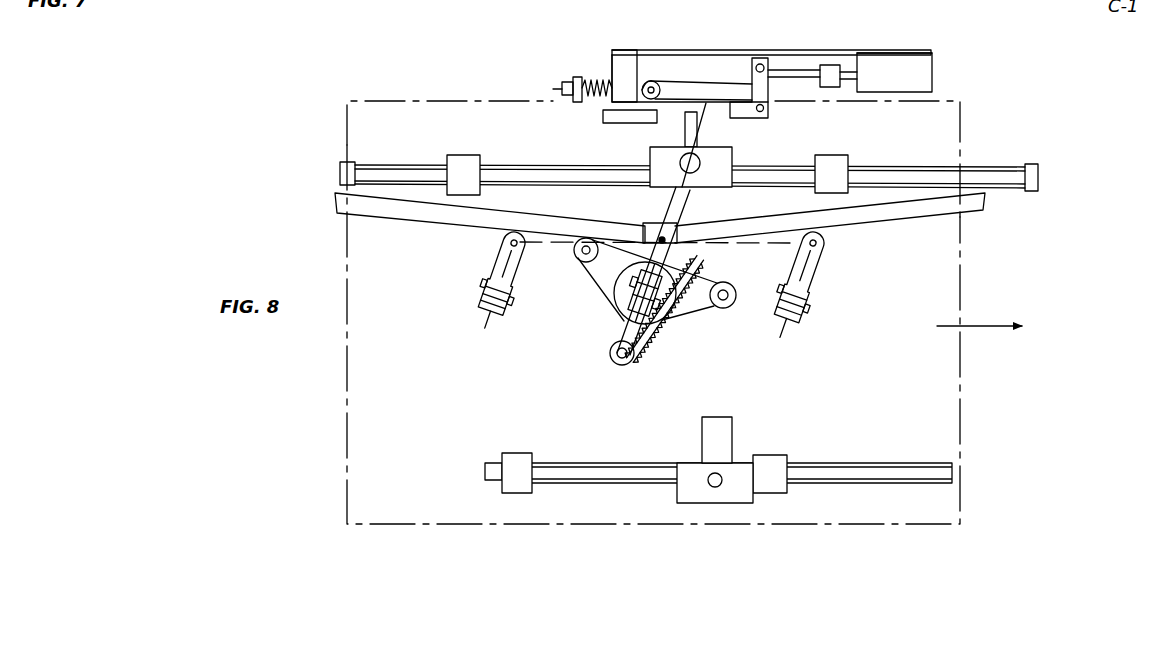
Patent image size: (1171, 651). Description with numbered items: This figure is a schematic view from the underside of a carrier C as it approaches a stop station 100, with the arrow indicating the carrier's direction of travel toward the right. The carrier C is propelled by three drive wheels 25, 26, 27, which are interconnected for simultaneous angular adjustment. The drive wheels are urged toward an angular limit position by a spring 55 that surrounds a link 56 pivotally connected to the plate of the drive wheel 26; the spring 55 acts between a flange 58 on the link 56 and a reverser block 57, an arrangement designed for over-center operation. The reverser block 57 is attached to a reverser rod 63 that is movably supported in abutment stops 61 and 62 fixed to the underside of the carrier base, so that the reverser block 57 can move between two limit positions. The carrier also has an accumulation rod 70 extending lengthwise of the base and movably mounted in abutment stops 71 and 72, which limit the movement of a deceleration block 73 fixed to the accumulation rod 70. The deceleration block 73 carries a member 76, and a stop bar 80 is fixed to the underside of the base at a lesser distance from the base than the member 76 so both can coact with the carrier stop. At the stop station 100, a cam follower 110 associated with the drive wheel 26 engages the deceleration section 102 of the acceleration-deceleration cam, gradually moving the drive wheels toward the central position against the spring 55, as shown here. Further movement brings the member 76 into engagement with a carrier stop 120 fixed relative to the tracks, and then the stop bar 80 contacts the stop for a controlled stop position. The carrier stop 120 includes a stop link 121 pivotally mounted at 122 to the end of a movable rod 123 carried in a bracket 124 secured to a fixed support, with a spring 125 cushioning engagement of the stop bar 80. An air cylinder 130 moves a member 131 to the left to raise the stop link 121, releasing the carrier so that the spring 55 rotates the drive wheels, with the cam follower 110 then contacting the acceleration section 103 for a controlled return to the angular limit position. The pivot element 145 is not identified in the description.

The drive wheel 25 is at (498, 320).
The drive wheel 26 is at (630, 315).
The drive wheel 27 is at (802, 322).
The spring 55 is at (655, 388).
The link 56 is at (662, 407).
The reverser block 57 is at (683, 493).
The flange 58 is at (727, 430).
The abutment stop 61 is at (520, 487).
The abutment stop 62 is at (772, 487).
The reverser rod 63 is at (820, 472).
The accumulation rod 70 is at (998, 172).
The abutment stop 71 is at (833, 163).
The abutment stop 72 is at (472, 158).
The deceleration block 73 is at (717, 177).
The member 76 is at (692, 132).
The stop bar 80 is at (632, 123).
The stop station 100 is at (1032, 256).
The deceleration section 102 is at (440, 213).
The acceleration section 103 is at (860, 217).
The cam follower 110 is at (572, 256).
The carrier stop 120 is at (808, 47).
The stop link 121 is at (688, 88).
The pivot 122 is at (662, 82).
The movable rod 123 is at (593, 80).
The bracket 124 is at (888, 53).
The spring 125 is at (607, 82).
The air cylinder 130 is at (923, 75).
The member 131 is at (820, 70).
The pivot roller 145 is at (730, 287).
The carrier C is at (938, 402).